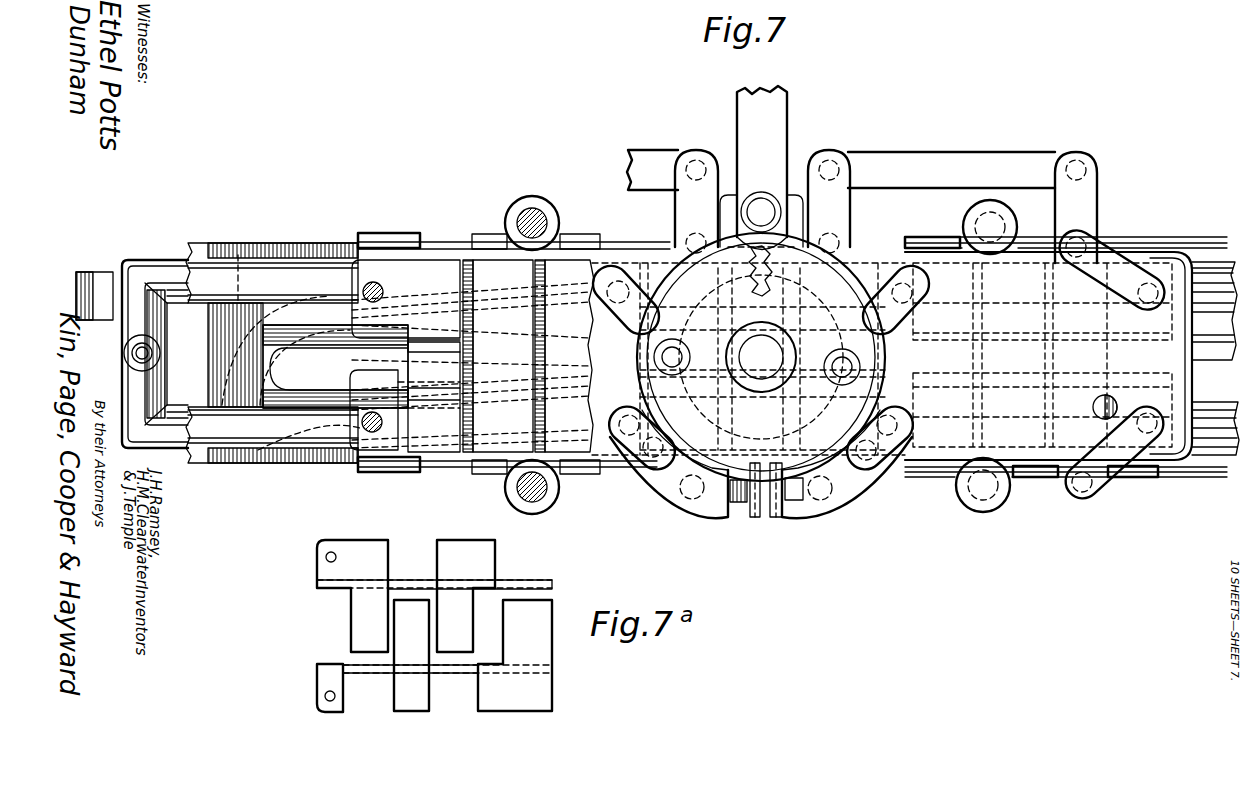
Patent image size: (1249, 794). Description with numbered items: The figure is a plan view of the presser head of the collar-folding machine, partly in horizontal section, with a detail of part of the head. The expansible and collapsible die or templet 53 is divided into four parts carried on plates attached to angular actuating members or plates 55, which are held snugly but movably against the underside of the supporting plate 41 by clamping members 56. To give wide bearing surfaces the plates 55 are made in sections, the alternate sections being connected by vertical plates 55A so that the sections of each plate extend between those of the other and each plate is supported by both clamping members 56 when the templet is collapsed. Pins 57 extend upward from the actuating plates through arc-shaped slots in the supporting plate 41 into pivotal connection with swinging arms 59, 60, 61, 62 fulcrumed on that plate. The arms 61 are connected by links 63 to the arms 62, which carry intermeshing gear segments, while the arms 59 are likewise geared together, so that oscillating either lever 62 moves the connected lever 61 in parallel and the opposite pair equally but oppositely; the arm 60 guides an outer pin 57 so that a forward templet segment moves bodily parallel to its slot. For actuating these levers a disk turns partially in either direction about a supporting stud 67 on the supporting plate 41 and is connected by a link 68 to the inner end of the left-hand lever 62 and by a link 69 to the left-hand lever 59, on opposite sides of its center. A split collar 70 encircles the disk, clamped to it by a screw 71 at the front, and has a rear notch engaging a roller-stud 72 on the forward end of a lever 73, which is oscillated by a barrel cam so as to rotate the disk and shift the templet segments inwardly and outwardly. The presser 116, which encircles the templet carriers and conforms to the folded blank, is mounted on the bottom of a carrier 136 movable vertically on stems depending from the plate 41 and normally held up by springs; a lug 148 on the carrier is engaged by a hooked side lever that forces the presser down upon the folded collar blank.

In FIG. 7, the supporting plate 41 is at (1184, 377).
In FIG. 7, the expansible and collapsible die or templet 53 is at (281, 396).
In FIG. 7, the angular actuating members or plates 55 is at (437, 260).
In FIG. 7A, the angular actuating members or plates 55 is at (437, 552).
In FIG. 7A, the vertical plates 55A is at (533, 580).
In FIG. 7, the clamping members 56 is at (373, 235).
In FIG. 7, the pins 57 is at (384, 292).
In FIG. 7, the swinging arms 59 is at (672, 478).
In FIG. 7, the swinging arm 60 is at (1112, 482).
In FIG. 7, the arms or levers 61 is at (1117, 275).
In FIG. 7, the arms or levers 62 is at (626, 268).
In FIG. 7, the links 63 is at (862, 191).
In FIG. 7, the supporting stud 67 is at (761, 357).
In FIG. 7, the link 68 is at (748, 357).
In FIG. 7, the link 69 is at (725, 478).
In FIG. 7, the split collar 70 is at (773, 514).
In FIG. 7, the screw 71 is at (793, 503).
In FIG. 7, the roller-stud 72 is at (759, 196).
In FIG. 7, the lever 73 is at (787, 108).
In FIG. 7, the presser 116 is at (240, 381).
In FIG. 7, the carrier 136 is at (232, 272).
In FIG. 7, the lug 148 is at (132, 346).